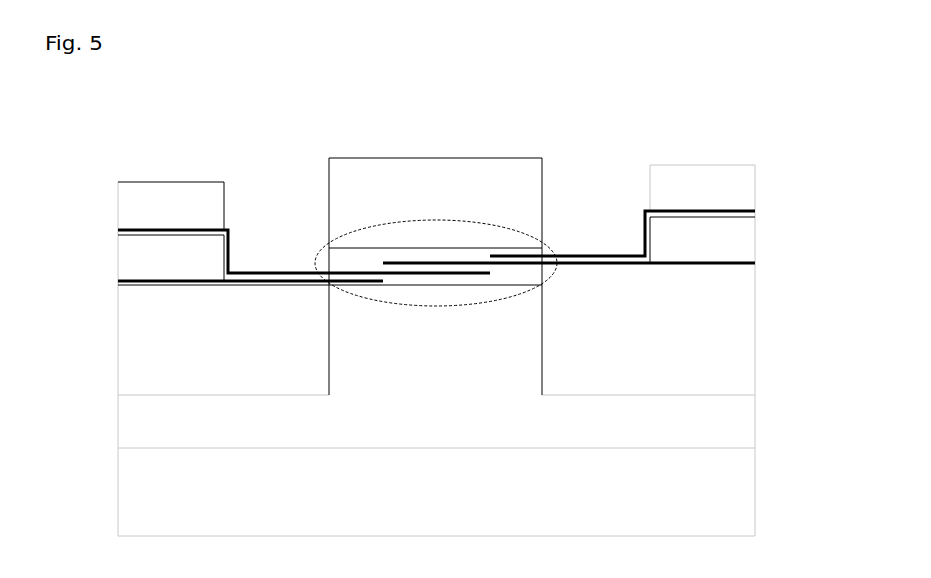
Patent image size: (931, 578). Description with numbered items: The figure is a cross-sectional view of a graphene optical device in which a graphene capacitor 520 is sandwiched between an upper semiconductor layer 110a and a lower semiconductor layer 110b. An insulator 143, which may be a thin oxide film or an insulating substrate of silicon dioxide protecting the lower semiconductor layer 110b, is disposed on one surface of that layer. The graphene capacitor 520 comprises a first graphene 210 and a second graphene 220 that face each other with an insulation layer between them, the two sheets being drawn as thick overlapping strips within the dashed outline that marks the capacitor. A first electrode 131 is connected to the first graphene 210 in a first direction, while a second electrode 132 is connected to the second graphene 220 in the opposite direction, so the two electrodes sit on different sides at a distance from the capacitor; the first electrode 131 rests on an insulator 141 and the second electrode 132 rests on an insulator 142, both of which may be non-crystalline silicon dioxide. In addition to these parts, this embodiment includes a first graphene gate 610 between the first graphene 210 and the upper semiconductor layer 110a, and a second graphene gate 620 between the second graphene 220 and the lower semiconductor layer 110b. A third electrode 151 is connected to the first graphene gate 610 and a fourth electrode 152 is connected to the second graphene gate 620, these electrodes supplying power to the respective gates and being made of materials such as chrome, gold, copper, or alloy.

The upper semiconductor layer 110a is at (455, 182).
The lower semiconductor layer 110b is at (743, 415).
The first electrode 131 is at (743, 232).
The second electrode 132 is at (130, 210).
The insulator 141 is at (743, 325).
The insulator 142 is at (130, 328).
The insulator 143 is at (130, 490).
The third electrode 151 is at (743, 183).
The fourth electrode 152 is at (130, 260).
The first graphene 210 is at (518, 258).
The second graphene 220 is at (270, 271).
The graphene capacitor 520 is at (344, 234).
The first graphene gate 610 is at (600, 255).
The second graphene gate 620 is at (118, 281).